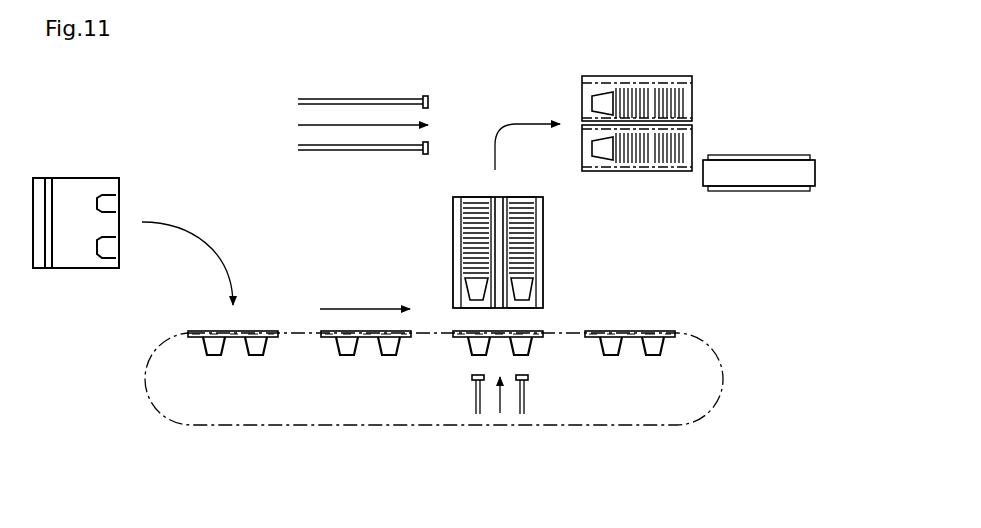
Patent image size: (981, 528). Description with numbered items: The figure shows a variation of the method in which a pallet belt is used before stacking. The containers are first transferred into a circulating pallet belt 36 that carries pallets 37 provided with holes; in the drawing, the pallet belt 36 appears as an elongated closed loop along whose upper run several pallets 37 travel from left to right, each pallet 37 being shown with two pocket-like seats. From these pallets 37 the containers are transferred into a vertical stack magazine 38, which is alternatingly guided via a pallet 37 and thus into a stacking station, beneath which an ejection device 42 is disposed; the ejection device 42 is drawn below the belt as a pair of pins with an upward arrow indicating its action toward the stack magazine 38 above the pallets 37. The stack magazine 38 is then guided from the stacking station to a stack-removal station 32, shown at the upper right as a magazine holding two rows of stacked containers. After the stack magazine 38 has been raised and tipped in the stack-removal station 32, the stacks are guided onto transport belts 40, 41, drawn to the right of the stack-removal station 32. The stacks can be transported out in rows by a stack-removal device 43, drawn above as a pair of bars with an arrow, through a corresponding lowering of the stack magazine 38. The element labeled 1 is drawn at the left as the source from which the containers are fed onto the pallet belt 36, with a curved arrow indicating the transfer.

The module / housing 1 is at (67, 255).
The stack-removal station 32 is at (619, 72).
The circulating pallet belt 36 is at (302, 336).
The pallet 37 is at (231, 337).
The stack magazine 38 is at (537, 250).
The transport belt 40 is at (759, 174).
The transport belt 41 is at (759, 173).
The ejection device 42 is at (527, 395).
The stack-removal device 43 is at (380, 98).